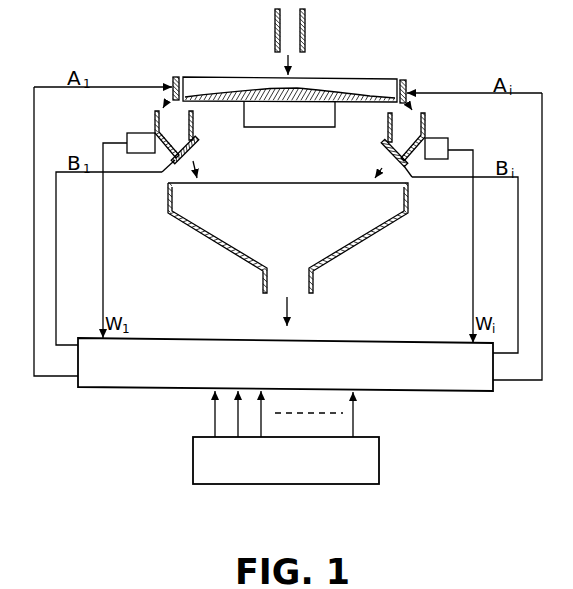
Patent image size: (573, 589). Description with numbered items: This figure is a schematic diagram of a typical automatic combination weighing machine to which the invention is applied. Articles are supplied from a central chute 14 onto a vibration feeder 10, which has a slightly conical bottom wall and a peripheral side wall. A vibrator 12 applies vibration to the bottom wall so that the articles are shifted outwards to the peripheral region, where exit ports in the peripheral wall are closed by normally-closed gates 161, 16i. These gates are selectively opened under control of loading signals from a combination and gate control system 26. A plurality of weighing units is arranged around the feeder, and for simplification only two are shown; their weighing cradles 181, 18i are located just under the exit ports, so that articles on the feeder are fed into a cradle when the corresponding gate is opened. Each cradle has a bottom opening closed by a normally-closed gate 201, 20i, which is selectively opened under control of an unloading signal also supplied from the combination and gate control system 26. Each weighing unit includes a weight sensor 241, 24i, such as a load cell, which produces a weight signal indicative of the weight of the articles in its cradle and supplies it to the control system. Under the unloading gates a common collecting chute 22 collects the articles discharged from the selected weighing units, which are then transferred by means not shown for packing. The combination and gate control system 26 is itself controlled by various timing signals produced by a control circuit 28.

The vibration feeder 10 is at (330, 78).
The vibrator 12 is at (292, 128).
The central chute 14 is at (306, 31).
The gate 161 is at (172, 78).
The gate 16i is at (406, 80).
The weighing cradle 181 is at (194, 119).
The weighing cradle 18i is at (387, 119).
The gate 201 is at (199, 141).
The gate 20i is at (382, 142).
The common collecting chute 22 is at (362, 246).
The weight sensor 241 is at (132, 133).
The weight sensor 24i is at (448, 141).
The combination and gate control system 26 is at (348, 341).
The control circuit 28 is at (381, 462).